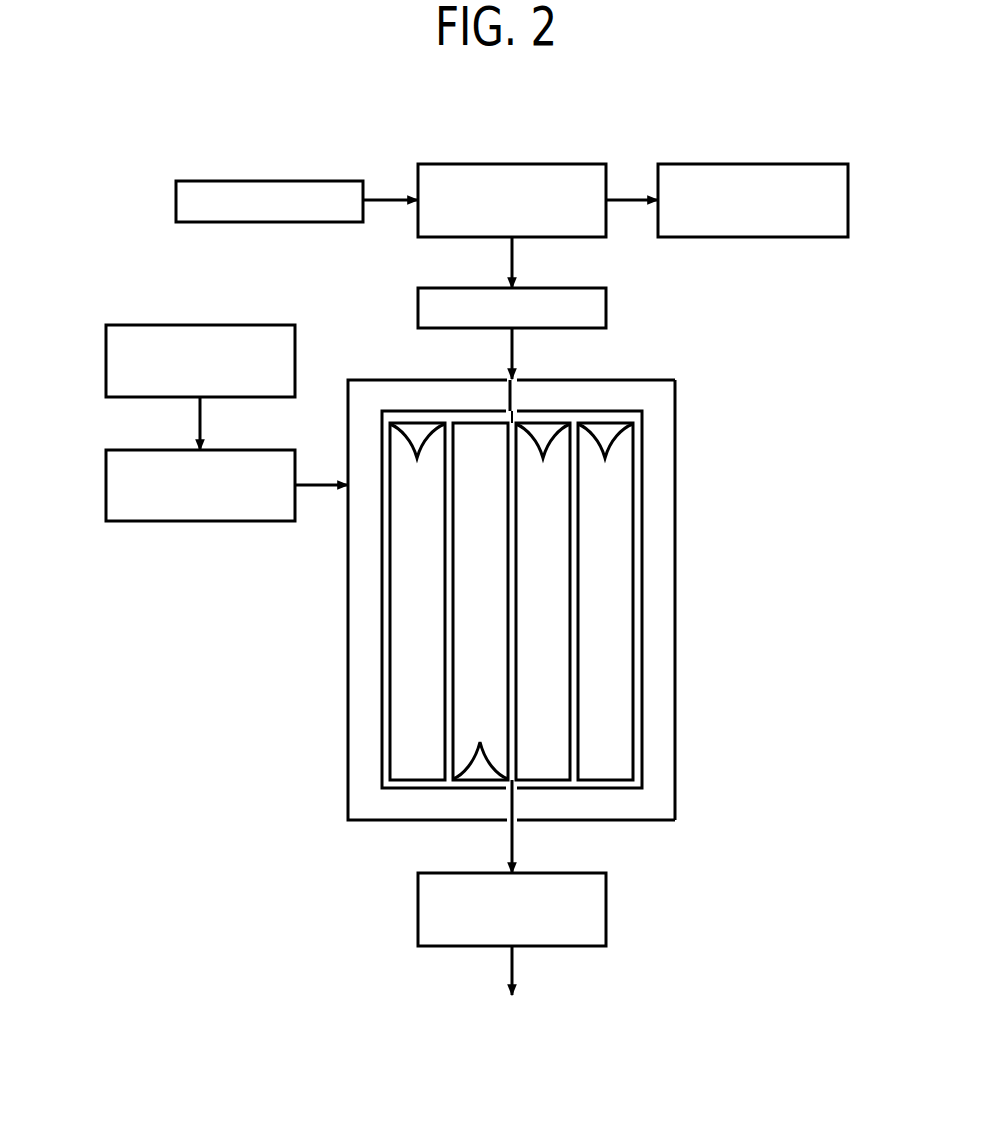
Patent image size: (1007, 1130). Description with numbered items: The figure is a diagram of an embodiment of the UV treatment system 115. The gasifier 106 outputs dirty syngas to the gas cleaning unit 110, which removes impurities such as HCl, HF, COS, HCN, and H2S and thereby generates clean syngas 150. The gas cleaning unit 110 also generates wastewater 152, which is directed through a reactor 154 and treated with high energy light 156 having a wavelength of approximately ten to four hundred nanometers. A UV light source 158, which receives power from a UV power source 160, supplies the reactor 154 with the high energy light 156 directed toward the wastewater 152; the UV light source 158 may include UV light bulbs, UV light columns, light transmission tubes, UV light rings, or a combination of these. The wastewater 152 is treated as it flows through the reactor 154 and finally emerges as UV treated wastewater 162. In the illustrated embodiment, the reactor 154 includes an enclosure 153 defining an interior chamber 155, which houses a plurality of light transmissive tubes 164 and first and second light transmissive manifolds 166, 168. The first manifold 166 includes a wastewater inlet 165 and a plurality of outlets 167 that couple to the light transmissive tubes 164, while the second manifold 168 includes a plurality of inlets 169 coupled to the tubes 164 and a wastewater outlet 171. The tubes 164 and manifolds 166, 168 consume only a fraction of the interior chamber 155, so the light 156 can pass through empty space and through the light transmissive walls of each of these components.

The gasifier 106 is at (268, 181).
The gas cleaning unit 110 is at (508, 164).
The clean syngas 150 is at (750, 164).
The wastewater 152 is at (606, 310).
The UV treatment system 115 is at (549, 607).
The enclosure 153 is at (658, 380).
The reactor 154 is at (680, 401).
The interior chamber 155 is at (582, 393).
The high energy light 156 is at (376, 427).
The UV light source 158 is at (106, 488).
The UV power source 160 is at (197, 325).
The UV treated wastewater 162 is at (606, 925).
The light transmissive tubes 164 is at (445, 748).
The wastewater inlet 165 is at (503, 393).
The first light transmissive manifold 166 is at (545, 410).
The outlets 167 is at (511, 460).
The second light transmissive manifold 168 is at (570, 792).
The inlets 169 is at (480, 742).
The wastewater outlet 171 is at (505, 805).